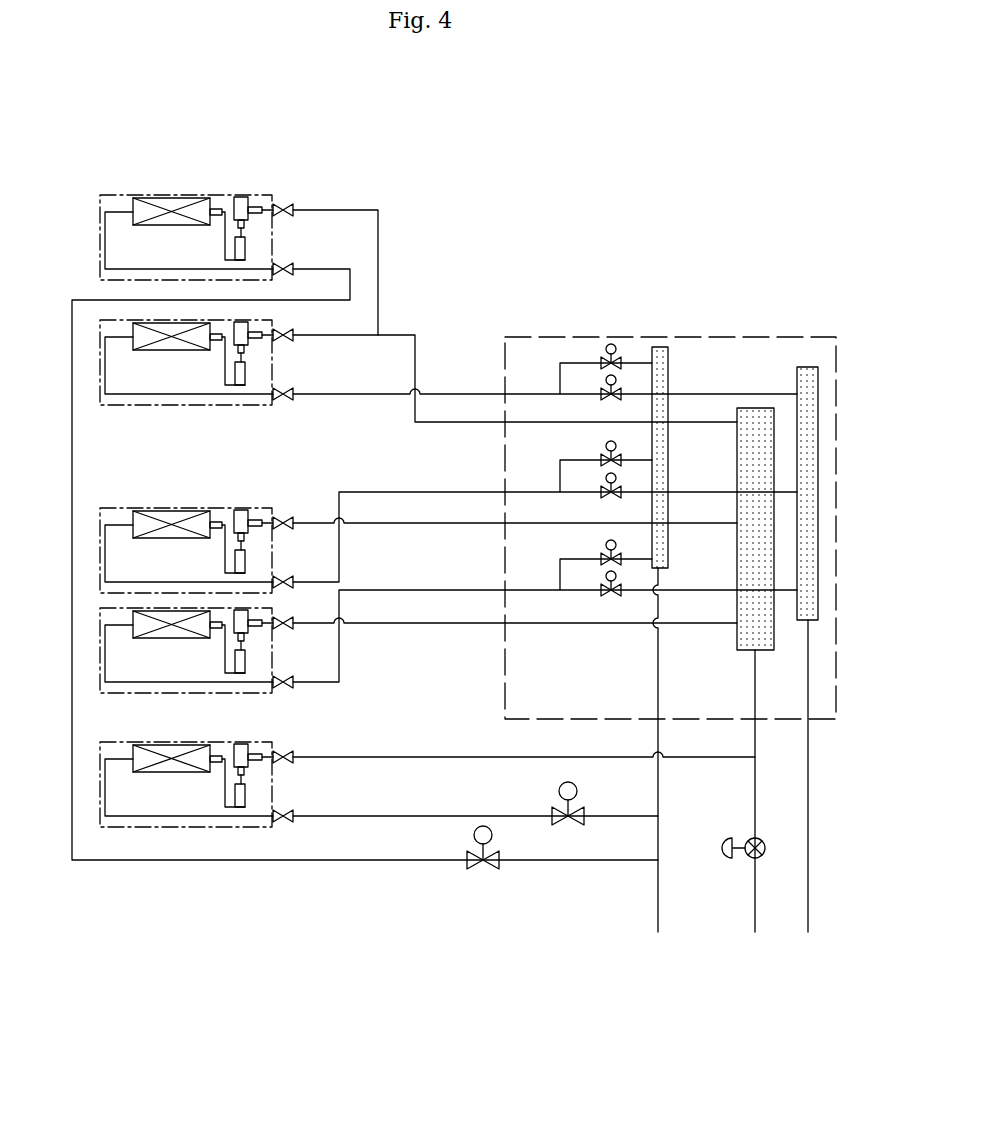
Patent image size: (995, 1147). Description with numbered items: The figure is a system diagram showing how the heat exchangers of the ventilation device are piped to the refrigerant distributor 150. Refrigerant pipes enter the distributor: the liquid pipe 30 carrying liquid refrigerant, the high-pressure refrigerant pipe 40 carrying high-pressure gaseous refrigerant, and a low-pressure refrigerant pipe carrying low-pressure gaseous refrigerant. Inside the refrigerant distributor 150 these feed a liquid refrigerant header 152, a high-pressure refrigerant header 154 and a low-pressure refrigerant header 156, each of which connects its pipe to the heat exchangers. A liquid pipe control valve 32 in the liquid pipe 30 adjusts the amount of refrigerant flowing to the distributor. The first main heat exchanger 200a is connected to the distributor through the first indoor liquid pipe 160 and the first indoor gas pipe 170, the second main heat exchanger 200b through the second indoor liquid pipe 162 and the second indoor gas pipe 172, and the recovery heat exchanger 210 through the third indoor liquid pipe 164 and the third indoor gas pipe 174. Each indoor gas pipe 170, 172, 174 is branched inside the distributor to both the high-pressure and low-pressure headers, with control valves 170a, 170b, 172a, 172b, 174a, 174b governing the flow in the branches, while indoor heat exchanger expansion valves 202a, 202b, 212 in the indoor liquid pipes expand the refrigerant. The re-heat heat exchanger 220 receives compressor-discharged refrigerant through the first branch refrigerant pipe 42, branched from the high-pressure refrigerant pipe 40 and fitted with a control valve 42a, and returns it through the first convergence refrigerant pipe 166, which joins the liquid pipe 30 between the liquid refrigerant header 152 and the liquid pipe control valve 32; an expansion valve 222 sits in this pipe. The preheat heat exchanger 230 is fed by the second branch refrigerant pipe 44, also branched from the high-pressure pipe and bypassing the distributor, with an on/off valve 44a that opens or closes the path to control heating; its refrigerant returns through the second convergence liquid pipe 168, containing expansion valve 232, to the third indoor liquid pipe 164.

The liquid pipe 30 is at (756, 920).
The liquid pipe control valve 32 is at (760, 840).
The high-pressure refrigerant pipe 40 is at (659, 920).
The first branch refrigerant pipe 42 is at (520, 815).
The control valve 42a is at (575, 815).
The second branch refrigerant pipe 44 is at (72, 335).
The on/off valve 44a is at (478, 868).
The refrigerant distributor 150 is at (836, 343).
The liquid refrigerant header 152 is at (752, 408).
The high-pressure refrigerant header 154 is at (658, 348).
The low-pressure refrigerant header 156 is at (812, 408).
The first indoor liquid pipe 160 is at (368, 621).
The second indoor liquid pipe 162 is at (368, 522).
The third indoor liquid pipe 164 is at (416, 350).
The first convergence refrigerant pipe 166 is at (385, 757).
The second convergence liquid pipe 168 is at (338, 210).
The first indoor gas pipe 170 is at (340, 659).
The control valve 170a is at (601, 592).
The control valve 170b is at (604, 557).
The second indoor gas pipe 172 is at (368, 491).
The control valve 172a is at (601, 494).
The control valve 172b is at (604, 459).
The third indoor gas pipe 174 is at (345, 394).
The control valve 174a is at (601, 396).
The control valve 174b is at (604, 361).
The first main heat exchanger 200a is at (121, 694).
The second main heat exchanger 200b is at (128, 508).
The indoor heat exchanger expansion valve 202a is at (244, 620).
The indoor heat exchanger expansion valve 202b is at (245, 510).
The recovery heat exchanger 210 is at (120, 407).
The indoor heat exchanger expansion valve 212 is at (242, 330).
The re-heat heat exchanger 220 is at (272, 778).
The expansion valve 222 is at (246, 757).
The preheat heat exchanger 230 is at (174, 197).
The expansion valve 232 is at (240, 197).